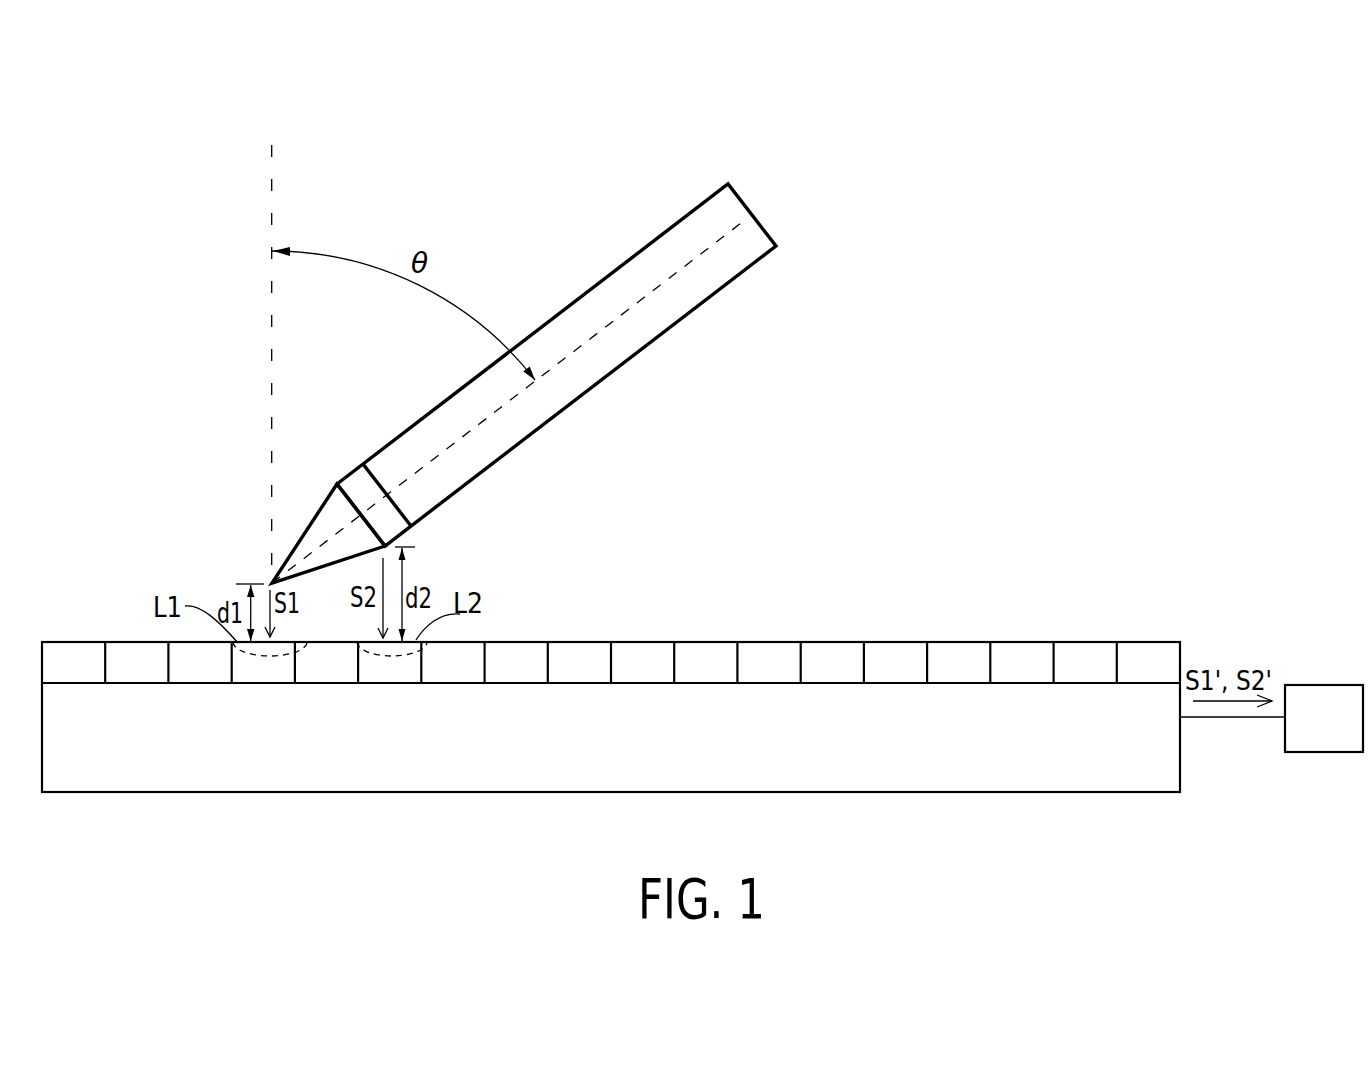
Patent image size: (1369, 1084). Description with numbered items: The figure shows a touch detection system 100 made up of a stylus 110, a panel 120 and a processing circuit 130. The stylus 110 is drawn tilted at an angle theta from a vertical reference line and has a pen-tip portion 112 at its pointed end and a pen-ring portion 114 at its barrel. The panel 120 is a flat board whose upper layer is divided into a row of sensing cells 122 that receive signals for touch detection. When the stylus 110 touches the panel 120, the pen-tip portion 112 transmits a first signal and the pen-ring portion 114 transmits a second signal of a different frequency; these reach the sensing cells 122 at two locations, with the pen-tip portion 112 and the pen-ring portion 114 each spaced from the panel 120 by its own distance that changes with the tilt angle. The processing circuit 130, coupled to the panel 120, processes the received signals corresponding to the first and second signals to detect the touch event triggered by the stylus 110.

The touch detection system 100 is at (1110, 158).
The stylus 110 is at (465, 341).
The pen-tip portion 112 is at (270, 581).
The pen-ring portion 114 is at (354, 482).
The panel 120 is at (997, 794).
The sensing cells 122 is at (76, 698).
The processing circuit 130 is at (1345, 732).